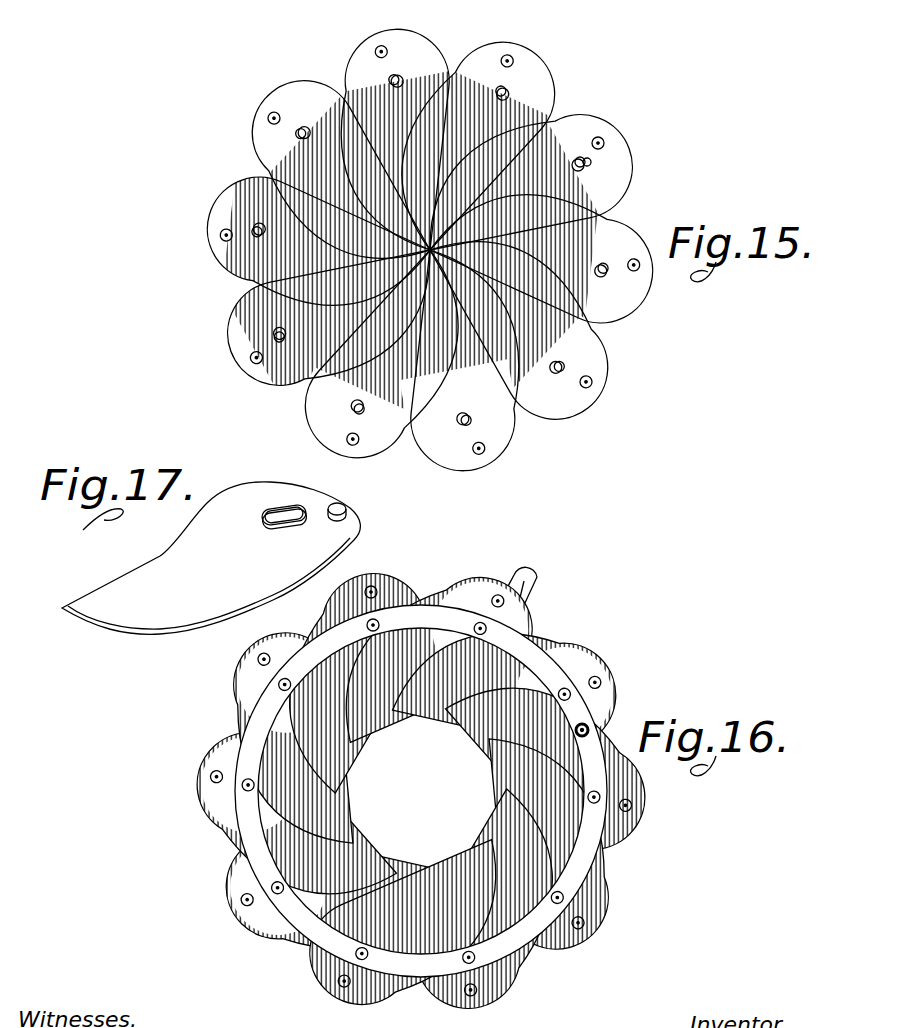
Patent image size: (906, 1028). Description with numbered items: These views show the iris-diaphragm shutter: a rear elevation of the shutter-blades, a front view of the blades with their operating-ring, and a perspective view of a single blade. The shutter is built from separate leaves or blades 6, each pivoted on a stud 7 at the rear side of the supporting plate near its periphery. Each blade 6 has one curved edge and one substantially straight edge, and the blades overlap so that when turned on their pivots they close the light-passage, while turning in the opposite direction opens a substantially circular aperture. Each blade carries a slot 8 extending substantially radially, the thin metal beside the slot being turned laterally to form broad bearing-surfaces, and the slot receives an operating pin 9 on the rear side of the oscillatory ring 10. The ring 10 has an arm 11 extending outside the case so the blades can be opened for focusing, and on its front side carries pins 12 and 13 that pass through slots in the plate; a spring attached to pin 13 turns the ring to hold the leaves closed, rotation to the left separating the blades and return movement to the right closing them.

In FIG. 15, the shutter-blade 6 is at (430, 254).
In FIG. 17, the shutter-blade 6 is at (211, 558).
In FIG. 15, the stud 7 is at (603, 138).
In FIG. 16, the stud 7 is at (375, 588).
In FIG. 15, the slot 8 is at (589, 165).
In FIG. 17, the slot 8 is at (270, 526).
In FIG. 15, the operating pin 9 is at (574, 178).
In FIG. 16, the oscillatory ring 10 is at (536, 662).
In FIG. 16, the arm 11 is at (528, 581).
In FIG. 16, the pin 12 is at (588, 725).
In FIG. 16, the pin 13 is at (372, 631).